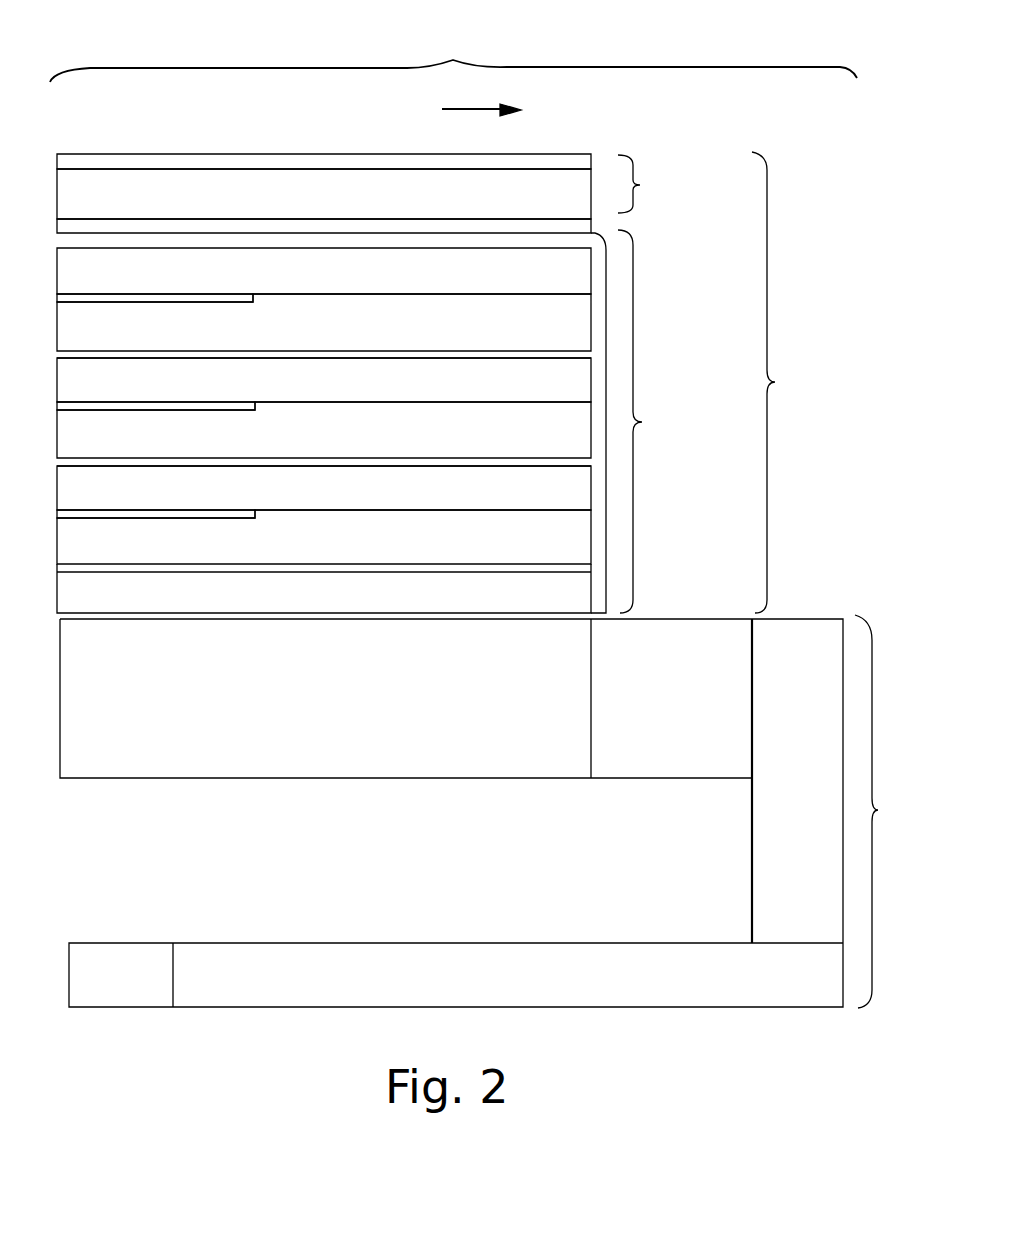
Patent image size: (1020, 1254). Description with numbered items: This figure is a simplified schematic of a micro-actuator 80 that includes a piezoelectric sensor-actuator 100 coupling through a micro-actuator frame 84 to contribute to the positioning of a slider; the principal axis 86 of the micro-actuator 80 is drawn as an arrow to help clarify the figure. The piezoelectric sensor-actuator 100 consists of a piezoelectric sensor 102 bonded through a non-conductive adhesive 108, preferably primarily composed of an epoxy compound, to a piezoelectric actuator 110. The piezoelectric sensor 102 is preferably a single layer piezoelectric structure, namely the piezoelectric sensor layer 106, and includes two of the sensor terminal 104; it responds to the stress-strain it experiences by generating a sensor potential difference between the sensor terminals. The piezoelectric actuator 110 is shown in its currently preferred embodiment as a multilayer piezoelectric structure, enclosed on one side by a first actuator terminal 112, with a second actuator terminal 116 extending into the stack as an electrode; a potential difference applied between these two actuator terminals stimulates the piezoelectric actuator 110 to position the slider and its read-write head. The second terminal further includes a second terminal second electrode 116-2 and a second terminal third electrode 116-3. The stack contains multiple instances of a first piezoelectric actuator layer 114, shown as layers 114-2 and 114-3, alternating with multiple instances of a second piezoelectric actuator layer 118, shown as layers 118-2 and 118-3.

The micro-actuator 80 is at (453, 51).
The principal axis 86 is at (470, 109).
The sensor terminal 104 is at (247, 154).
The piezoelectric sensor layer 106 is at (329, 203).
The non-conductive adhesive 108 is at (483, 219).
The piezoelectric sensor 102 is at (661, 184).
The first actuator terminal 112 is at (588, 260).
The first piezoelectric actuator layer 114 is at (417, 281).
The second actuator terminal 116 is at (228, 303).
The second piezoelectric actuator layer 118 is at (417, 338).
The first piezoelectric actuator layer instance 114-2 is at (443, 391).
The second terminal second electrode 116-2 is at (232, 410).
The second piezoelectric actuator layer instance 118-2 is at (443, 450).
The first piezoelectric actuator layer instance 114-3 is at (443, 498).
The second terminal third electrode 116-3 is at (232, 518).
The second piezoelectric actuator layer instance 118-3 is at (443, 555).
The piezoelectric actuator 110 is at (662, 421).
The piezoelectric sensor-actuator 100 is at (801, 382).
The micro-actuator frame 84 is at (493, 811).